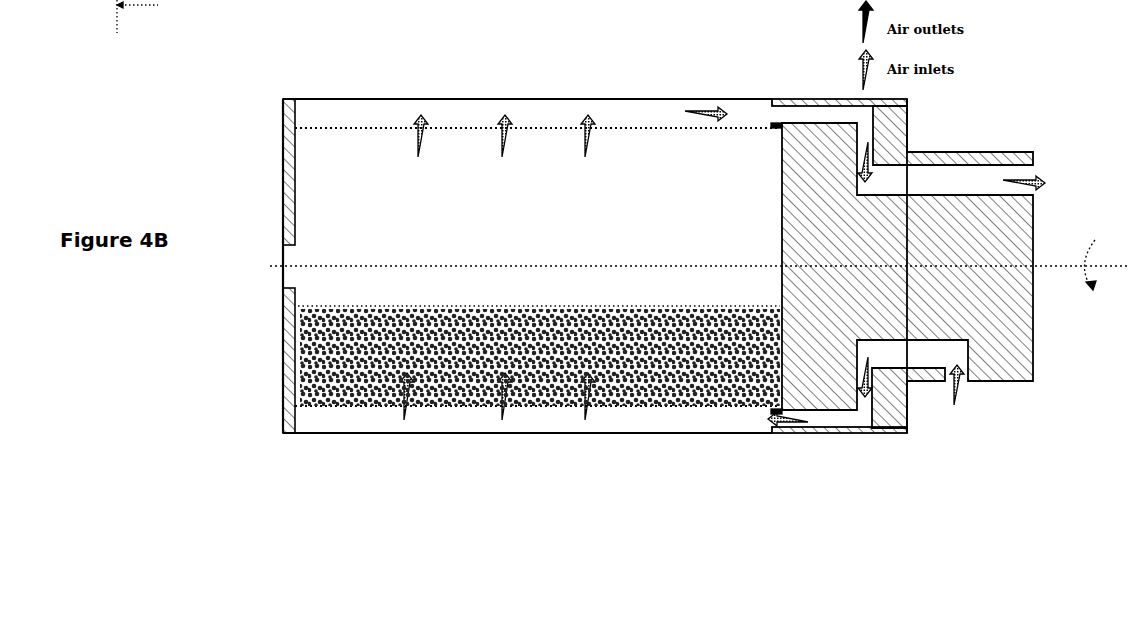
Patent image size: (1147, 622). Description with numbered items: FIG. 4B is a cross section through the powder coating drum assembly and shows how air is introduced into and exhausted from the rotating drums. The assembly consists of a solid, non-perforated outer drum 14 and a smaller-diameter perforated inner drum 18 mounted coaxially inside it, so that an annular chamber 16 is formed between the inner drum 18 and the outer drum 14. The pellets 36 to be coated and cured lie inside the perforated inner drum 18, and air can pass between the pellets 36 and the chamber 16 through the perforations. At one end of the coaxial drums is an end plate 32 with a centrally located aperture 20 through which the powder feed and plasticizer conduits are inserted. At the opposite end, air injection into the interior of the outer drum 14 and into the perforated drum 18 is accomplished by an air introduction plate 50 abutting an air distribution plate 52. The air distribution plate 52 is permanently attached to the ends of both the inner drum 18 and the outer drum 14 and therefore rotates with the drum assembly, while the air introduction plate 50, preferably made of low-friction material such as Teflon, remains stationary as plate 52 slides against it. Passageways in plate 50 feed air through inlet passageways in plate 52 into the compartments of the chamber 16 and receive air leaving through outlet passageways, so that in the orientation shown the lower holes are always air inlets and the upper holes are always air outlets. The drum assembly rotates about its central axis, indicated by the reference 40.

The outer drum 14 is at (533, 99).
The chamber 16 is at (393, 115).
The perforated inner drum 18 is at (410, 468).
The aperture 20 is at (283, 268).
The end plate 32 is at (283, 137).
The pellets 36 is at (539, 341).
The rotation direction 40 is at (1050, 266).
The air introduction plate 50 is at (963, 152).
The air distribution plate 52 is at (811, 93).